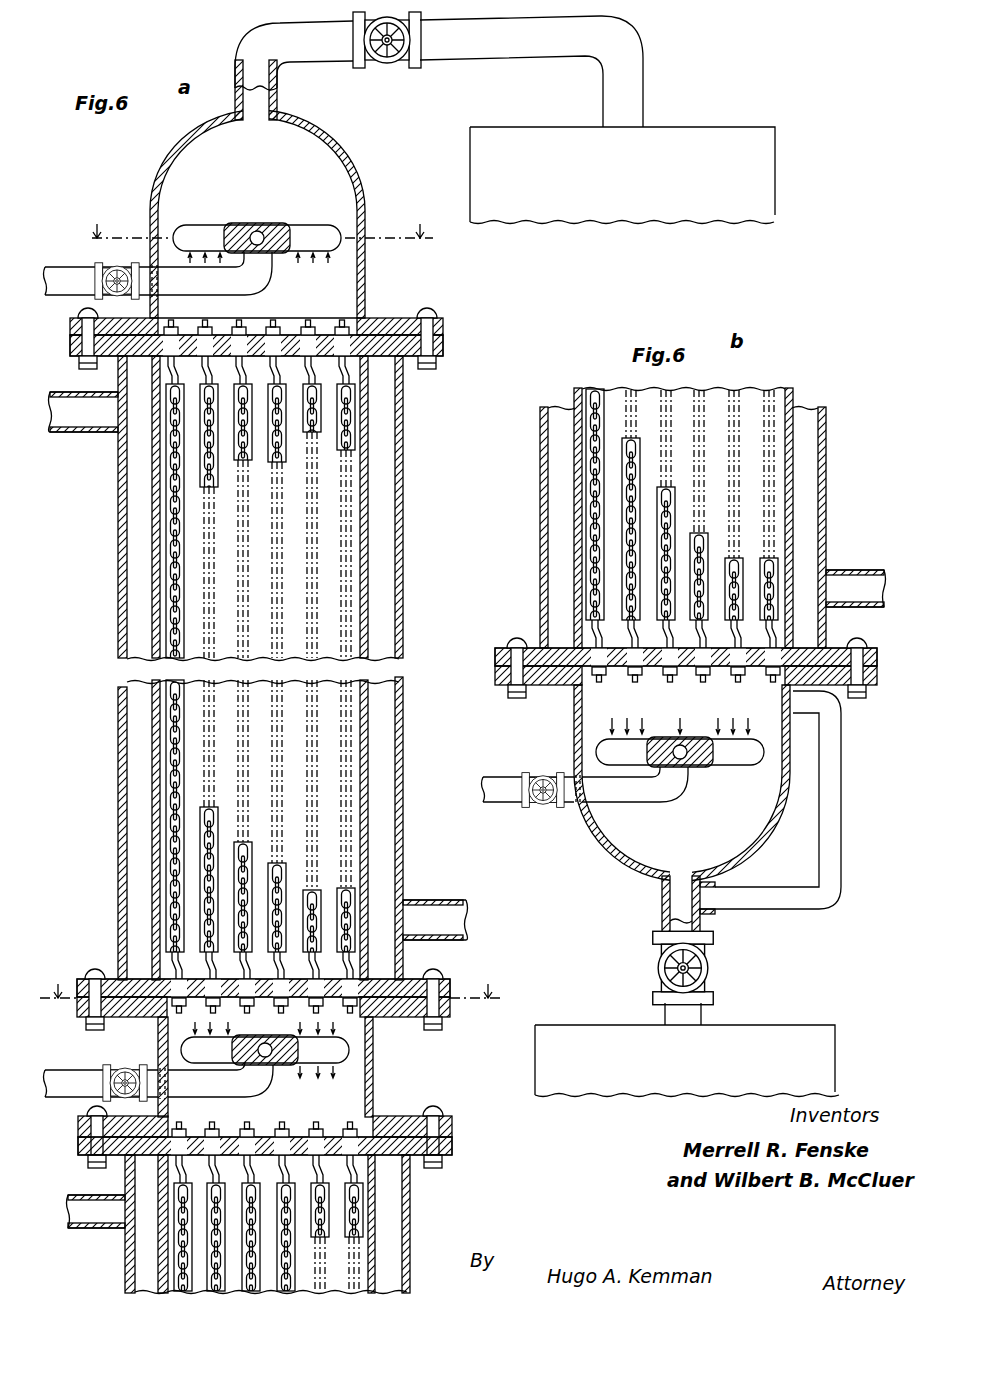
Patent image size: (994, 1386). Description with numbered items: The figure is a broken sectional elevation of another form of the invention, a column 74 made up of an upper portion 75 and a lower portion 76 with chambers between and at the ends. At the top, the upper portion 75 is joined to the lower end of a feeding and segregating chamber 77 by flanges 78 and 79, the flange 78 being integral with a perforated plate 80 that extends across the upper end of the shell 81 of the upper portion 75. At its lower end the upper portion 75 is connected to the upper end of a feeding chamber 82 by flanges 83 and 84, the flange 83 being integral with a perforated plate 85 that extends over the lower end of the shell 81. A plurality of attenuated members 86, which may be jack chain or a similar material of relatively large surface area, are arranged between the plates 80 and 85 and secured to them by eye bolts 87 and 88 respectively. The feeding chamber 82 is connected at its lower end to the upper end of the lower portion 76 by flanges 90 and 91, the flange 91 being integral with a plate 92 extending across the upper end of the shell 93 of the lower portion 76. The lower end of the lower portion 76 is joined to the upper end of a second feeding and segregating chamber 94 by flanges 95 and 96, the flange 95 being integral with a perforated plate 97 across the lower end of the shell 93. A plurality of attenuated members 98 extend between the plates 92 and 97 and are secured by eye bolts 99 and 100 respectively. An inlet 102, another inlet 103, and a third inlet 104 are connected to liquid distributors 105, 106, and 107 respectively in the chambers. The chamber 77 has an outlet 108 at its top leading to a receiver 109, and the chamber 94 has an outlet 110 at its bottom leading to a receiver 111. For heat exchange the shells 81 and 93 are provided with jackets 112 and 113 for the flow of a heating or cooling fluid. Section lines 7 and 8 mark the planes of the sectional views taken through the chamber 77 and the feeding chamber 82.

In FIG. 6A, the section line 7- 7 is at (261, 237).
In FIG. 6A, the section line 8- 8 is at (275, 996).
In FIG. 6A, the column 74 is at (414, 858).
In FIG. 6A, the upper portion 75 is at (383, 778).
In FIG. 6A, the lower portion 76 is at (392, 1225).
In FIG. 6B, the lower portion 76 is at (803, 466).
In FIG. 6A, the feeding and segregating chamber 77 is at (325, 165).
In FIG. 6A, the flange 78 is at (440, 345).
In FIG. 6A, the flange 79 is at (436, 314).
In FIG. 6A, the perforated plate 80 is at (318, 345).
In FIG. 6A, the shell 81 is at (368, 592).
In FIG. 6A, the feeding chamber 82 is at (360, 1082).
In FIG. 6A, the flange 83 is at (445, 982).
In FIG. 6A, the flange 84 is at (452, 1005).
In FIG. 6A, the perforated plate 85 is at (210, 985).
In FIG. 6A, the attenuated members 86 is at (217, 781).
In FIG. 6A, the eye bolts 87 is at (260, 355).
In FIG. 6A, the eye bolts 88 is at (264, 1013).
In FIG. 6A, the flange 90 is at (403, 1120).
In FIG. 6A, the flange 91 is at (452, 1140).
In FIG. 6A, the plate 92 is at (300, 1150).
In FIG. 6A, the shell 93 is at (158, 1262).
In FIG. 6B, the shell 93 is at (574, 501).
In FIG. 6B, the feeding and segregating chamber 94 is at (625, 828).
In FIG. 6B, the flange 95 is at (505, 645).
In FIG. 6B, the flange 96 is at (540, 690).
In FIG. 6B, the perforated plate 97 is at (578, 632).
In FIG. 6A, the attenuated members 98 is at (311, 1270).
In FIG. 6B, the attenuated members 98 is at (722, 631).
In FIG. 6A, the eye bolts 99 is at (260, 1170).
In FIG. 6B, the eye bolts 100 is at (680, 660).
In FIG. 6A, the inlet 102 is at (72, 272).
In FIG. 6A, the inlet 103 is at (90, 1078).
In FIG. 6B, the inlet 104 is at (510, 800).
In FIG. 6A, the liquid distributor 105 is at (295, 226).
In FIG. 6A, the liquid distributor 106 is at (345, 1052).
In FIG. 6B, the liquid distributor 107 is at (726, 767).
In FIG. 6A, the outlet 108 is at (277, 92).
In FIG. 6A, the receiver 109 is at (668, 142).
In FIG. 6B, the outlet 110 is at (665, 914).
In FIG. 6B, the receiver 111 is at (752, 1040).
In FIG. 6A, the jacket 112 is at (118, 548).
In FIG. 6A, the jacket 113 is at (410, 1273).
In FIG. 6B, the jacket 113 is at (540, 464).